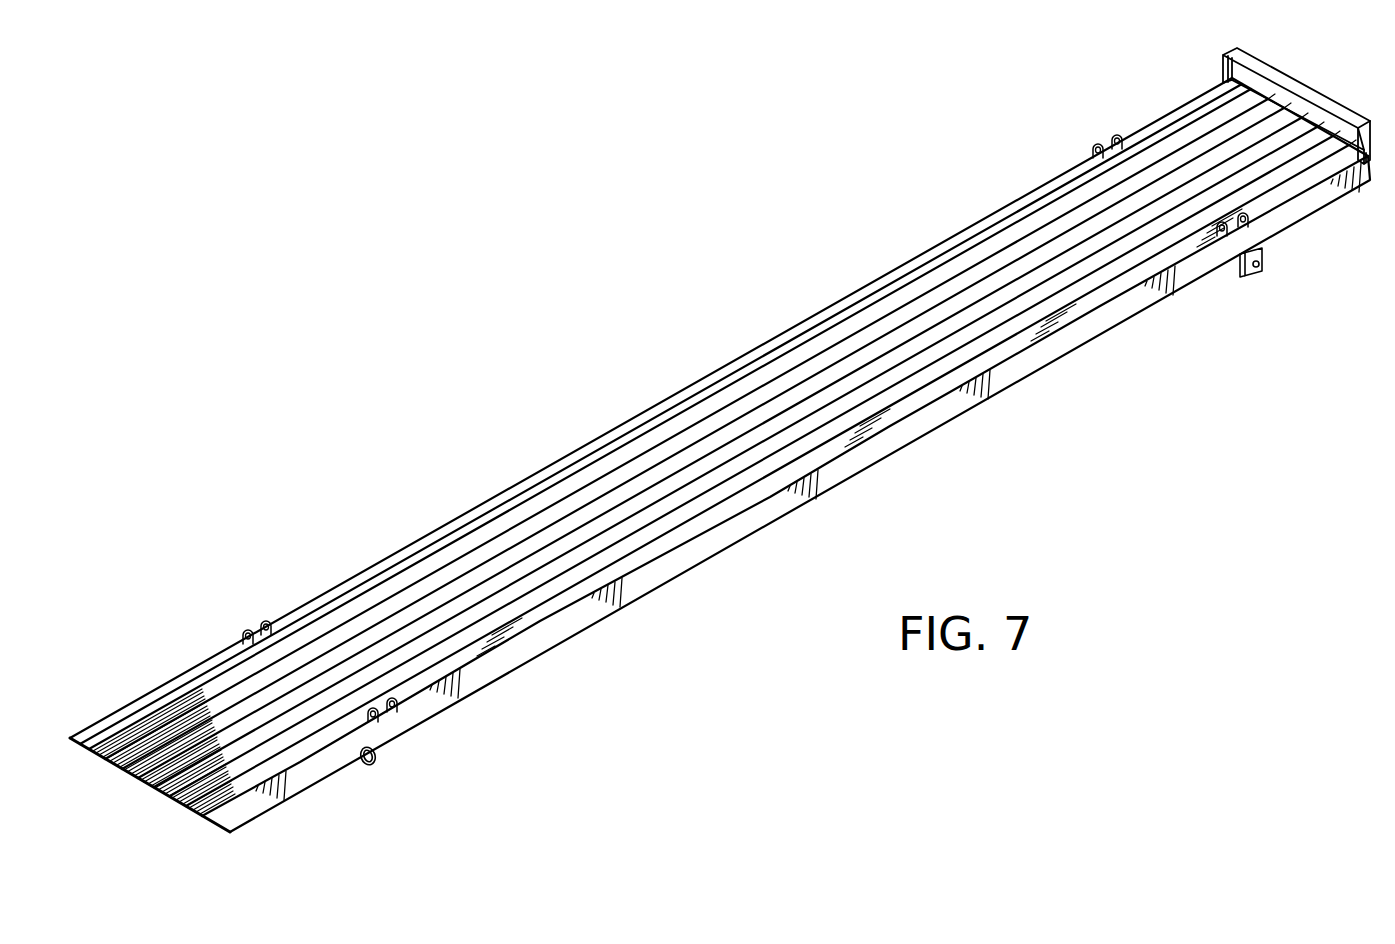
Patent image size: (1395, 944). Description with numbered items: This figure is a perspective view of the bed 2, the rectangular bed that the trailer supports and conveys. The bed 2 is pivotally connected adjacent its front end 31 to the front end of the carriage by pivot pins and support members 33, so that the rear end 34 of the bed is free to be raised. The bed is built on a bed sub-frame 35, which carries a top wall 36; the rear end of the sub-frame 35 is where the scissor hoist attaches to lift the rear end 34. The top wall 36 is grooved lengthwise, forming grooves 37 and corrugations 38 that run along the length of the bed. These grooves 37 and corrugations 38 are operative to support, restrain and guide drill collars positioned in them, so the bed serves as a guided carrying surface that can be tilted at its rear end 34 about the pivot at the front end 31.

The bed 2 is at (728, 440).
The front end 31 is at (1282, 228).
The support members 33 is at (1257, 265).
The rear end 34 is at (312, 775).
The bed sub-frame 35 is at (1038, 361).
The top wall 36 is at (883, 307).
The grooves 37 is at (1290, 117).
The corrugations 38 is at (1328, 135).